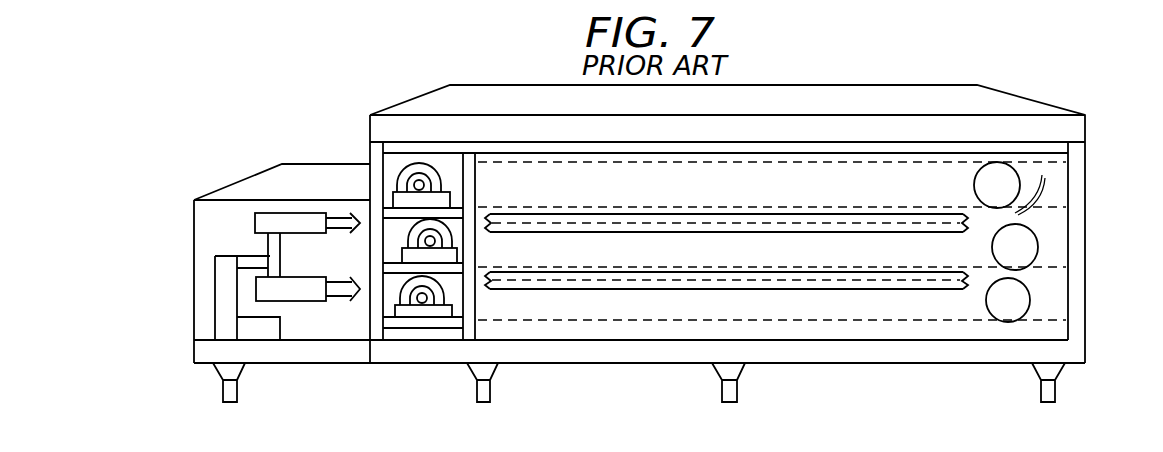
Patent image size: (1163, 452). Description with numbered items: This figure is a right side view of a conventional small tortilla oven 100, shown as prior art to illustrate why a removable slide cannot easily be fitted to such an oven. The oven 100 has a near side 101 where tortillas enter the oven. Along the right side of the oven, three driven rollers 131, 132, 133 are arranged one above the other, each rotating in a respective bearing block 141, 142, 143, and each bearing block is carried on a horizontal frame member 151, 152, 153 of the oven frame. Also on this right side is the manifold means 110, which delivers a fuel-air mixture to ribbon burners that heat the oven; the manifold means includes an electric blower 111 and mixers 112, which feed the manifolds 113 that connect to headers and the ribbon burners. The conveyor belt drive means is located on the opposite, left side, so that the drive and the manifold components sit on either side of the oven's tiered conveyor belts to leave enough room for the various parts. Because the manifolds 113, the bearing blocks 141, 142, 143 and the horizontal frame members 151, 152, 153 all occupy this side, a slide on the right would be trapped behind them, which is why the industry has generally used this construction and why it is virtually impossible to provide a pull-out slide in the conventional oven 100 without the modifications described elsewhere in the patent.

The conventional small tortilla oven 100 is at (1070, 98).
The near side 101 is at (352, 146).
The manifold means 110 is at (309, 323).
The electric blower 111 is at (220, 292).
The mixers 112 is at (279, 221).
The manifolds 113 is at (642, 227).
The driven roller 131 is at (415, 163).
The driven roller 132 is at (452, 237).
The driven roller 133 is at (443, 292).
The bearing block 141 is at (436, 199).
The bearing block 142 is at (452, 261).
The bearing block 143 is at (452, 311).
The horizontal frame member 151 is at (389, 208).
The horizontal frame member 152 is at (386, 265).
The horizontal frame member 153 is at (397, 323).